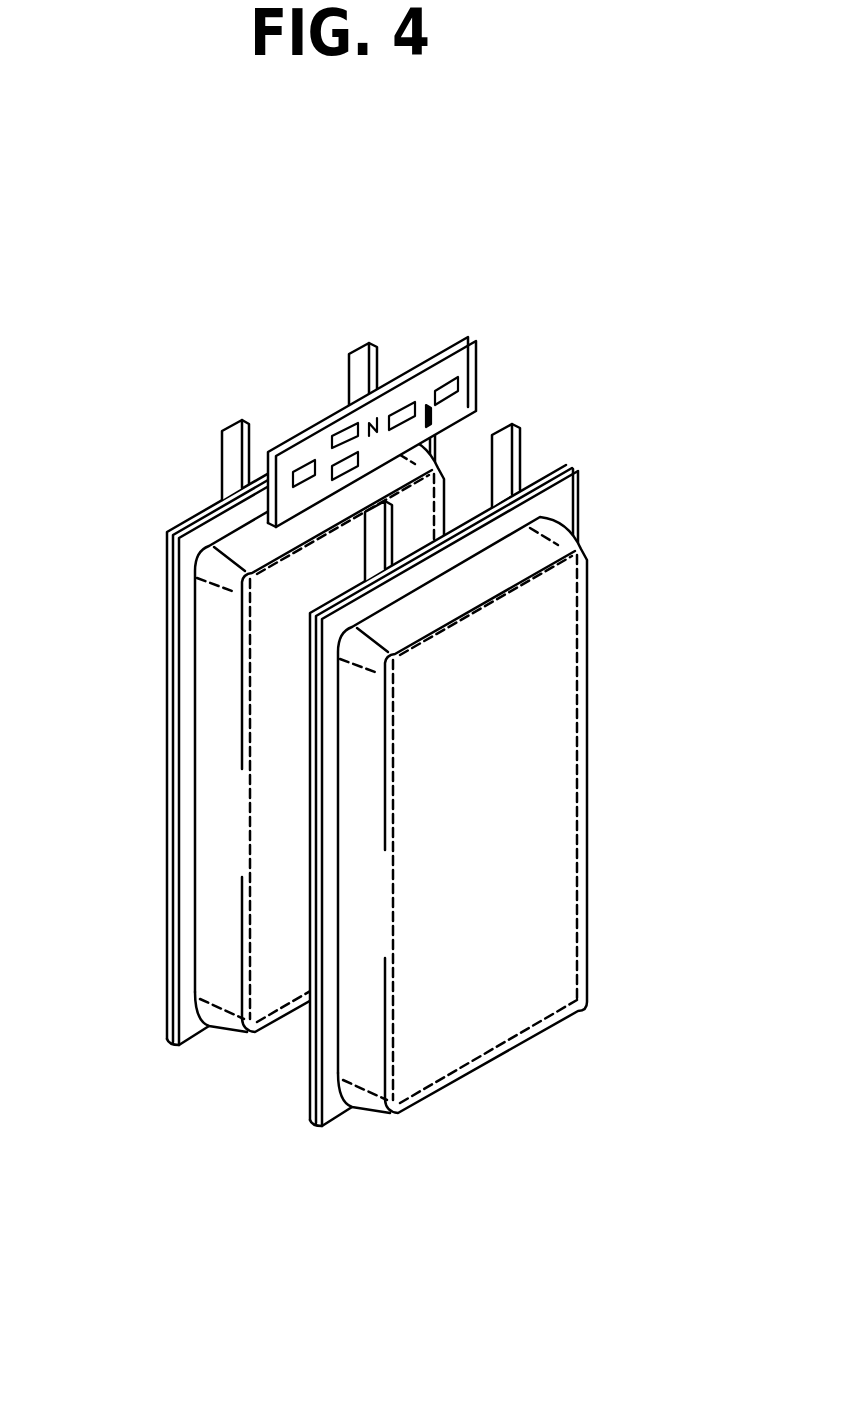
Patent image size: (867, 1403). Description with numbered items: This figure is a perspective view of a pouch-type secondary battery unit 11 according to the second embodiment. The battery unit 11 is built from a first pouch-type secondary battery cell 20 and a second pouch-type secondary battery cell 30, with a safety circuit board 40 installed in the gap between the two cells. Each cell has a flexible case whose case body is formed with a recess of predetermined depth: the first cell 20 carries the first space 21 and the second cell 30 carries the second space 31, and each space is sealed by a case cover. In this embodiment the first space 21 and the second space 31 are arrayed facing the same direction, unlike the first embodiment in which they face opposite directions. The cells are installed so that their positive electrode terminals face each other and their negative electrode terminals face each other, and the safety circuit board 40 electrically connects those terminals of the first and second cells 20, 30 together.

The battery unit 11 is at (401, 711).
The first pouch-type secondary battery cell 20 is at (254, 777).
The first space 21 is at (217, 664).
The second pouch-type secondary battery cell 30 is at (499, 861).
The second space 31 is at (550, 783).
The safety circuit board 40 is at (492, 338).